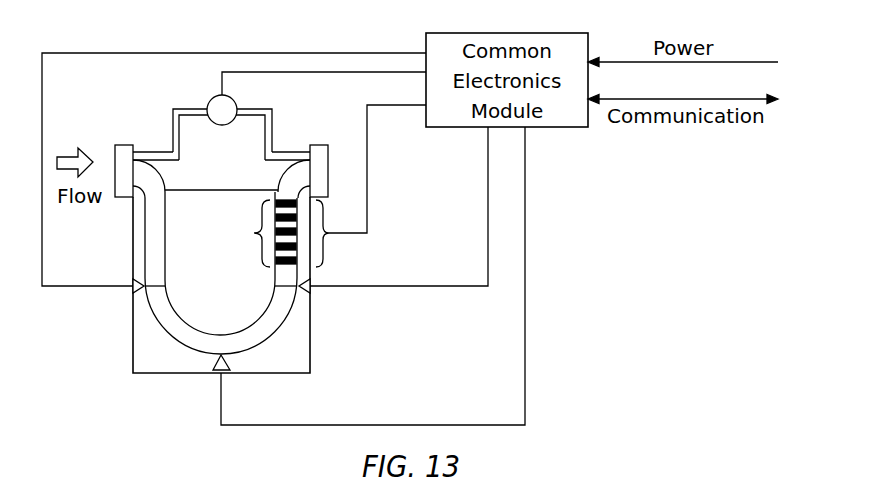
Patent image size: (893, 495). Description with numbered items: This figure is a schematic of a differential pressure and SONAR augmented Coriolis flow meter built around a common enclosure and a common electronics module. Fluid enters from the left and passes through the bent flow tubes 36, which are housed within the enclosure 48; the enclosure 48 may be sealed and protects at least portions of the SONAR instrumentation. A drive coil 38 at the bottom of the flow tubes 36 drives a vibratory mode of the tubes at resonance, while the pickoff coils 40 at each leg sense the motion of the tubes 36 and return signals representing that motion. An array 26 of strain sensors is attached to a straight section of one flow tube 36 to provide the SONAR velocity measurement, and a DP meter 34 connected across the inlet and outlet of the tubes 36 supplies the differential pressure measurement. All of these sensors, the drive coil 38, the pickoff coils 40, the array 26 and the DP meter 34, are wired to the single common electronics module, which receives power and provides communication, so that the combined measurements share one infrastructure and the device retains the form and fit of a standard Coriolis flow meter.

The array of strain sensors 26 is at (277, 233).
The DP meter 34 is at (209, 103).
The flow tubes 36 is at (181, 337).
The drive coil 38 is at (231, 366).
The pickoff coils 40 is at (131, 290).
The enclosure 48 is at (123, 328).